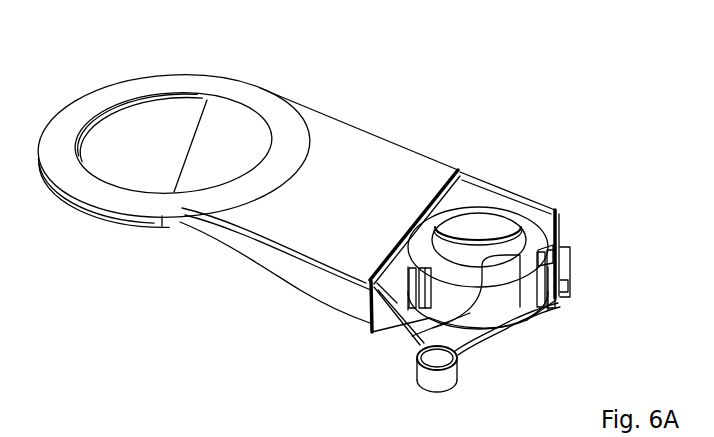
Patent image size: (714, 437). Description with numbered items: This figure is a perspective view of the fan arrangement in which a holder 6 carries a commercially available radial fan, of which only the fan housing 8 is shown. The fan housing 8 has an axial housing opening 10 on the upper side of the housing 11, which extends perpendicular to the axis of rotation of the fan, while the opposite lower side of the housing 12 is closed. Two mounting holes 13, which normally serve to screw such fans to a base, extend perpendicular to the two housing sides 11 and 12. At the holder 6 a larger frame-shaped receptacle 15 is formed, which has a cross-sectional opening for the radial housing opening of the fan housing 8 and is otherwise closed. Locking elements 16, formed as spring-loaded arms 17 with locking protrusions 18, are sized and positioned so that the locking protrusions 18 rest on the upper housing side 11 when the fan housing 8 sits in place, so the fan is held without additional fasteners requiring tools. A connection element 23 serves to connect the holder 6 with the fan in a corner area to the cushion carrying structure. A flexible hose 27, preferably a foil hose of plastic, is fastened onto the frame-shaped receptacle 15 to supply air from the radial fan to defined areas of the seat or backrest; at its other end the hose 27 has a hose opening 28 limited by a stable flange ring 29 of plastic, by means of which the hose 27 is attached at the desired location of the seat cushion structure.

The holder 6 is at (473, 348).
The fan housing 8 is at (482, 202).
The axial housing opening 10 is at (537, 212).
The upper side of the housing 11 is at (492, 184).
The lower side of the housing 12 is at (505, 340).
The mounting holes 13 is at (386, 266).
The frame-shaped receptacle 15 is at (466, 168).
The locking elements 16 is at (572, 240).
The spring-loaded arms 17 is at (567, 287).
The locking protrusions 18 is at (412, 336).
The connection element 23 is at (450, 387).
The flexible hose 27 is at (350, 176).
The hose opening 28 is at (157, 140).
The flange ring 29 is at (265, 92).